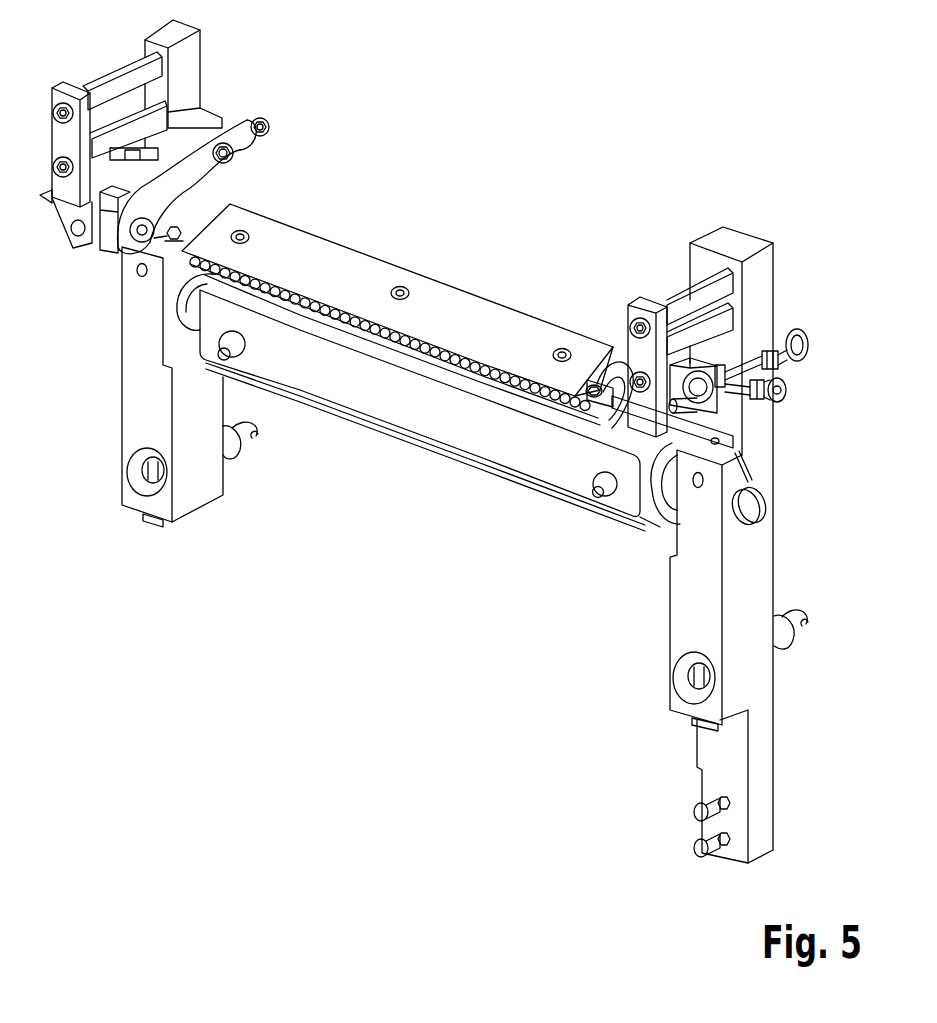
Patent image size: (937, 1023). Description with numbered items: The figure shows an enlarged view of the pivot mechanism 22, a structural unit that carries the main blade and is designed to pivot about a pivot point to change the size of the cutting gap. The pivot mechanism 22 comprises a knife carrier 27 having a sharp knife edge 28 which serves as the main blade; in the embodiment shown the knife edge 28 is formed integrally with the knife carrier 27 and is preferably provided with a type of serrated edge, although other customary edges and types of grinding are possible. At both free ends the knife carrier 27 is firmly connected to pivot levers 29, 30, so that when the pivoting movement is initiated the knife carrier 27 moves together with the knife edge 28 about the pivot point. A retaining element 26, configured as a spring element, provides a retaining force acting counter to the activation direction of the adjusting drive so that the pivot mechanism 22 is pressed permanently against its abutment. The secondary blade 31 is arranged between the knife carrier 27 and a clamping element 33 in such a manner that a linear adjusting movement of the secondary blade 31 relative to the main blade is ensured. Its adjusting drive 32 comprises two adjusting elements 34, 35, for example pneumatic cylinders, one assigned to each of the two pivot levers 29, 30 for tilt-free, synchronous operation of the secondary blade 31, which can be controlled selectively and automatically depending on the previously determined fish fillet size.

The pivot mechanism 22 is at (710, 180).
The retaining element 26 is at (243, 438).
The knife carrier 27 is at (582, 412).
The knife edge 28 is at (527, 387).
The pivot lever 29 is at (753, 543).
The pivot lever 30 is at (132, 350).
The secondary blade 31 is at (577, 395).
The adjusting drive 32 is at (822, 293).
The clamping element 33 is at (430, 293).
The adjusting element 34 is at (788, 365).
The adjusting element 35 is at (246, 122).